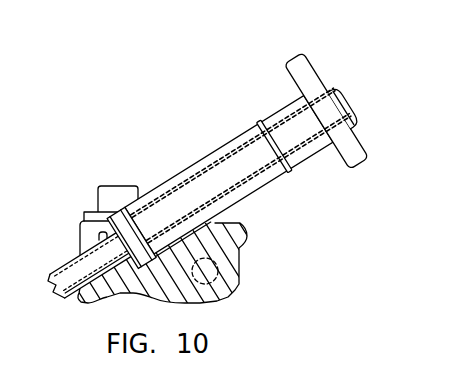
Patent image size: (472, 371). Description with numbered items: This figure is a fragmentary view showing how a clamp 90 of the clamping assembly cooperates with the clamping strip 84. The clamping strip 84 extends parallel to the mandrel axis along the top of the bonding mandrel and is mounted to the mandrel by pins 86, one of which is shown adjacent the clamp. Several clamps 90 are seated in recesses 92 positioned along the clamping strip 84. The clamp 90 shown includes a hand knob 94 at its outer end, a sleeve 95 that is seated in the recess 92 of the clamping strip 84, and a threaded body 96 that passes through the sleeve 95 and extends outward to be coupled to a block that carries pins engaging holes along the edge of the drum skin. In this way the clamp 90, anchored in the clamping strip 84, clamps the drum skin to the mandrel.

The clamping strip 84 is at (240, 257).
The pin 86 is at (112, 185).
The clamp 90 is at (233, 97).
The recess 92 is at (173, 230).
The hand knob 94 is at (312, 68).
The sleeve 95 is at (200, 160).
The threaded body 96 is at (73, 262).